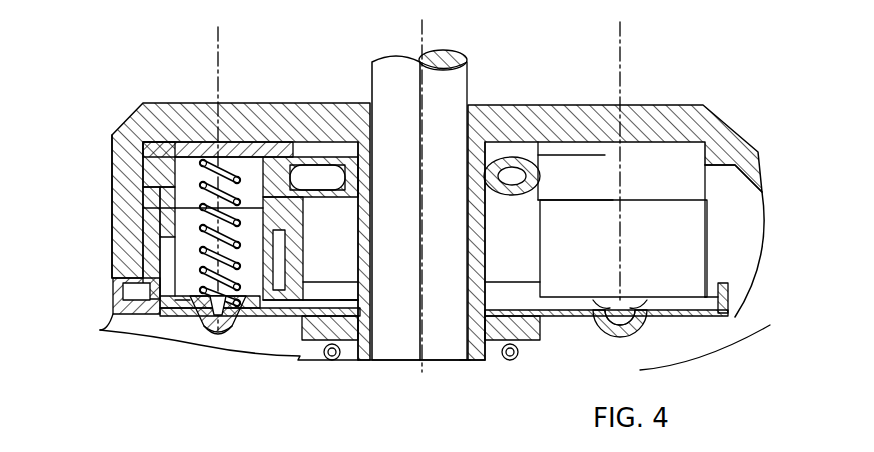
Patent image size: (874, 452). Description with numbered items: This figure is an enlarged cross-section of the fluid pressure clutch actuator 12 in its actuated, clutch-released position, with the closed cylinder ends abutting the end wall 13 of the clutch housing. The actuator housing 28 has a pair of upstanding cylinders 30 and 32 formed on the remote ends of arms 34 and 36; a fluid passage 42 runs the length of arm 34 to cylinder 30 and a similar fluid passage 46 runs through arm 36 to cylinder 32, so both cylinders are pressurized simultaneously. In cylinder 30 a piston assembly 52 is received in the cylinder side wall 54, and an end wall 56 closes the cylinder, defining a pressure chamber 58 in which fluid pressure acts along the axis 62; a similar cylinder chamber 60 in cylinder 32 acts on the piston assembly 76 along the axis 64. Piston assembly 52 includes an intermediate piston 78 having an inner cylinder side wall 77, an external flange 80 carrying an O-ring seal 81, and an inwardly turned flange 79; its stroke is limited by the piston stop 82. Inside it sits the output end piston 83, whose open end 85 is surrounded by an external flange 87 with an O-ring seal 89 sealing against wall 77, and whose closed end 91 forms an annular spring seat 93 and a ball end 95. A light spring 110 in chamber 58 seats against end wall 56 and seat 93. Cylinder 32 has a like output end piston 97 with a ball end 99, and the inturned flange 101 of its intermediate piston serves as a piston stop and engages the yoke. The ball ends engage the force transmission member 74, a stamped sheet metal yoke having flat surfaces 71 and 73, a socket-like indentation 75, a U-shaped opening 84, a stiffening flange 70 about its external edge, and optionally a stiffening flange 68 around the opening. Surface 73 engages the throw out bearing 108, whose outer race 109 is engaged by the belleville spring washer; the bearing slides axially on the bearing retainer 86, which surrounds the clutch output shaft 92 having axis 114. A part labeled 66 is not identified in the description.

The fluid pressure clutch actuator 12 is at (514, 135).
The end wall of the clutch housing 13 is at (316, 150).
The housing 28 is at (572, 140).
The cylinder 30 is at (90, 229).
The cylinder 32 is at (687, 145).
The arm 34 is at (347, 140).
The arm 36 is at (580, 205).
The fluid passage 42 is at (314, 175).
The fluid passage 46 is at (520, 175).
The piston assembly 52 is at (148, 243).
The cylinder side wall 54 is at (116, 286).
The end wall 56 is at (158, 103).
The cylinder chamber 58 is at (134, 132).
The cylinder chamber 60 is at (645, 160).
The axis 62 is at (218, 67).
The axis 64 is at (622, 52).
The wall 66 is at (112, 160).
The stiffening flange 68 is at (750, 165).
The stiffening flange 70 is at (110, 300).
The flat surface 71 is at (345, 298).
The flat surface 73 is at (298, 356).
The force transmission member 74 is at (748, 313).
The socket-like indentation 75 is at (626, 326).
The piston assembly 76 is at (548, 330).
The inner cylinder side wall 77 is at (226, 135).
The intermediate piston 78 is at (176, 316).
The inwardly turned flange 79 is at (190, 318).
The external flange 80 is at (145, 198).
The O-ring seal 81 is at (143, 208).
The piston stop 82 is at (152, 312).
The output end piston 83 is at (248, 316).
The U-shaped opening 84 is at (472, 292).
The open end 85 is at (304, 248).
The bearing retainer 86 is at (382, 222).
The external flange 87 is at (310, 274).
The O-ring seal 89 is at (309, 256).
The closed end 91 is at (203, 332).
The clutch output shaft 92 is at (384, 82).
The annular spring seat 93 is at (226, 334).
The ball end 95 is at (218, 330).
The output end piston 97 is at (602, 320).
The ball end 99 is at (612, 340).
The inturned flange 101 is at (705, 353).
The throw out bearing 108 is at (355, 352).
The outer race 109 is at (306, 345).
The spring 110 is at (225, 150).
The axis 114 is at (424, 38).